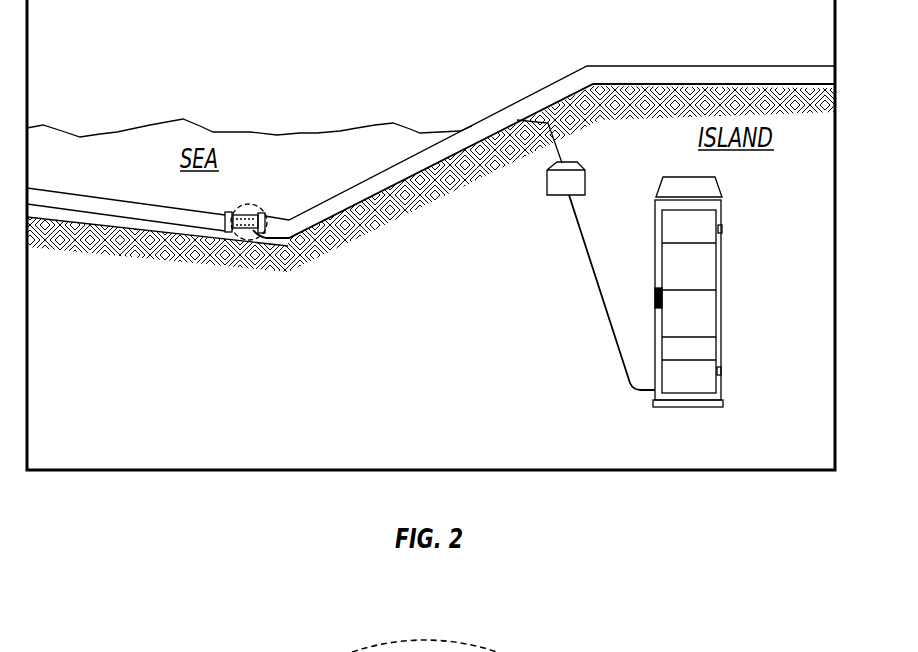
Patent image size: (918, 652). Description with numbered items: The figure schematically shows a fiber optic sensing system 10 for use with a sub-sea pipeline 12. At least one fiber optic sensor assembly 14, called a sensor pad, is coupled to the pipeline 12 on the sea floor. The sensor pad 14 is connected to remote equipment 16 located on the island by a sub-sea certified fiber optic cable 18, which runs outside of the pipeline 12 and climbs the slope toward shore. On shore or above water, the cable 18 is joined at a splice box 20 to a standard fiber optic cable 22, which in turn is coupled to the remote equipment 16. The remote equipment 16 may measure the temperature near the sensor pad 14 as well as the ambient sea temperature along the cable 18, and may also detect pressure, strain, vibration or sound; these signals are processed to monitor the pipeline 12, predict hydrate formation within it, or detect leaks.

The fiber optic sensing system 10 is at (330, 56).
The sub-sea pipeline 12 is at (93, 197).
The fiber optic sensor assembly 14 is at (248, 212).
The remote equipment 16 is at (725, 283).
The sub-sea certified fiber optic cable 18 is at (395, 182).
The splice box 20 is at (585, 172).
The standard fiber optic cable 22 is at (600, 302).